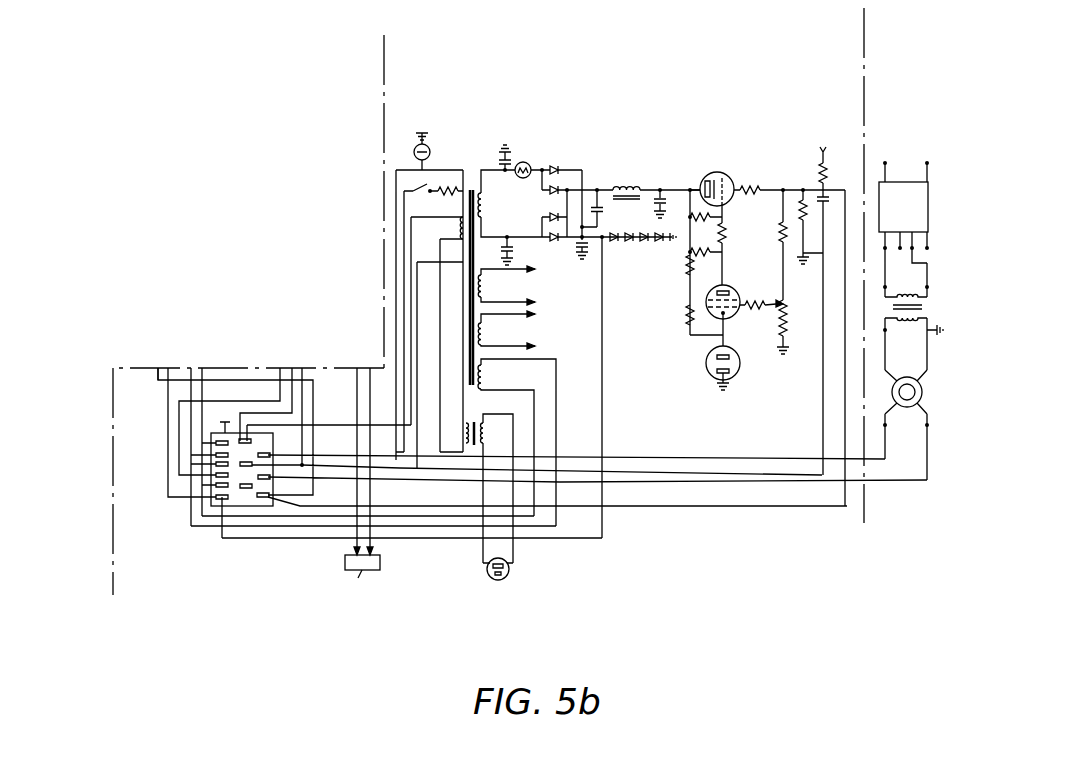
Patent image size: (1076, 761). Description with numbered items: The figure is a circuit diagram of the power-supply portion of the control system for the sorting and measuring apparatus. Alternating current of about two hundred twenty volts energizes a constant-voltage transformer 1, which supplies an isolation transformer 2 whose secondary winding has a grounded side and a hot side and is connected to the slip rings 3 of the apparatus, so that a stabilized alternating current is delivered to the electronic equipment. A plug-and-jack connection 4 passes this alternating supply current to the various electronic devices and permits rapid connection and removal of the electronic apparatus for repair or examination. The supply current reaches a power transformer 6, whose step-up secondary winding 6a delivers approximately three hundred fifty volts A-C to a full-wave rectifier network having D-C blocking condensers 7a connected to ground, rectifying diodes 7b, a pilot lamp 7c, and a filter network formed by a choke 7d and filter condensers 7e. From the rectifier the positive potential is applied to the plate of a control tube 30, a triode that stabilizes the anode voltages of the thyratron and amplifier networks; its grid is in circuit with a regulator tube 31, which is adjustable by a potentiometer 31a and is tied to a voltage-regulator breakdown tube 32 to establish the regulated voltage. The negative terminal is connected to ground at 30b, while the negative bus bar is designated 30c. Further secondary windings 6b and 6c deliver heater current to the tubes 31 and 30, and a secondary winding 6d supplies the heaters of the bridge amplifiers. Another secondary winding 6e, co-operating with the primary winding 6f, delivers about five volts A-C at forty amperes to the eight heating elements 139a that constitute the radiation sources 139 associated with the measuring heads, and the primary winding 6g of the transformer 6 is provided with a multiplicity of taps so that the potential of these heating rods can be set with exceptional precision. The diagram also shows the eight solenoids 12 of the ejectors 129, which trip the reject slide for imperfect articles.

The constant-voltage transformer 1 is at (928, 233).
The isolation transformer 2 is at (921, 308).
The slip rings 3 is at (923, 393).
The plug-and-jack connection 4 is at (270, 502).
The power transformer 6 is at (469, 297).
The step-up secondary winding 6a is at (486, 208).
The secondary winding 6b is at (486, 289).
The secondary winding 6c is at (486, 334).
The secondary winding 6d is at (486, 377).
The secondary winding 6e is at (497, 488).
The primary winding 6f is at (466, 433).
The primary winding 6g is at (460, 242).
The D-C blocking condensers 7a is at (512, 158).
The rectifying diodes 7b is at (556, 186).
The pilot lamp 7c is at (522, 178).
The choke 7d is at (632, 186).
The filter condensers 7e is at (601, 210).
The solenoids 12 is at (345, 561).
The control tube 30 is at (720, 172).
The ground connection 30b is at (669, 242).
The negative bus bar 30c is at (603, 320).
The regulator tube 31 is at (733, 291).
The potentiometer 31a is at (770, 323).
The voltage-regulator breakdown tube 32 is at (729, 373).
The ejectors 129 is at (352, 480).
The radiation sources 139 is at (529, 589).
The heating elements 139a is at (516, 565).